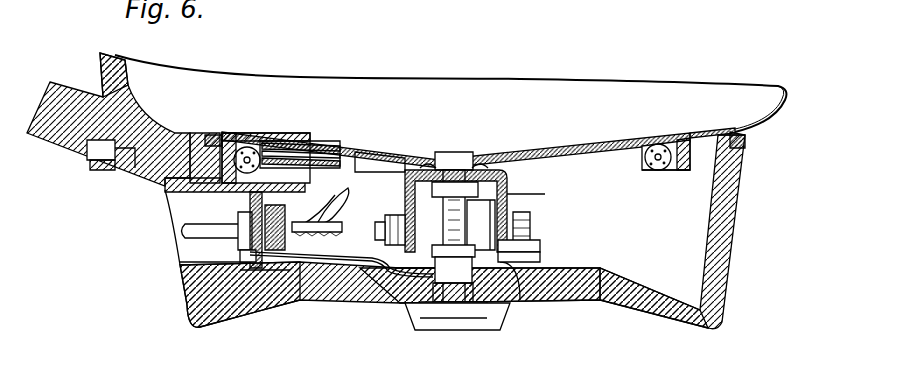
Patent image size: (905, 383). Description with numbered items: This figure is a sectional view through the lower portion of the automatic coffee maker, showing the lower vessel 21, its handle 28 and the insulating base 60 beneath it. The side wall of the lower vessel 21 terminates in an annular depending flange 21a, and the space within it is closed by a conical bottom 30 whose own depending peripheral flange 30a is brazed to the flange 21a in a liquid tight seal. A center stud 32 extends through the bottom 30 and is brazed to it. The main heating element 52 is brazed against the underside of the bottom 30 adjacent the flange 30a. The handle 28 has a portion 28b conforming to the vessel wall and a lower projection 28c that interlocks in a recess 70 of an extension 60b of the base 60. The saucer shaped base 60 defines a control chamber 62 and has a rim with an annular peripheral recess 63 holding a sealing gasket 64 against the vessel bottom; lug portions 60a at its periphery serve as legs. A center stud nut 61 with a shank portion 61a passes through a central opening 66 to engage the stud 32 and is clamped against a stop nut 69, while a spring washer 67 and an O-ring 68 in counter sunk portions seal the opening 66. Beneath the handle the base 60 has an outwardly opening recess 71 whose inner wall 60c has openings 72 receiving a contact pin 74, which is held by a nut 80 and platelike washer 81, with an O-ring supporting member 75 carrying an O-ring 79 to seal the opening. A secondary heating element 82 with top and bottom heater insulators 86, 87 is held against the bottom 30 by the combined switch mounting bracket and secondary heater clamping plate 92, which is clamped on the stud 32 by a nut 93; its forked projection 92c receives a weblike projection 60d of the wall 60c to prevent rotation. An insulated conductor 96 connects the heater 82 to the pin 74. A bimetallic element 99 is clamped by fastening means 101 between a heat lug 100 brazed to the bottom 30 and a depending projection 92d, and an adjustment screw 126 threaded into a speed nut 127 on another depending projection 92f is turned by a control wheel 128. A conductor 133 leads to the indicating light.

The lower vessel 21 is at (782, 92).
The annular depending flange 21a is at (215, 136).
The handle 28 is at (44, 140).
The handle portion 28b is at (104, 64).
The projection 28c is at (132, 176).
The bottom 30 is at (575, 146).
The depending peripheral flange 30a is at (680, 172).
The center stud 32 is at (449, 153).
The main heating element 52 is at (656, 148).
The insulating base 60 is at (732, 216).
The lug portions 60a is at (200, 328).
The extension 60b is at (135, 175).
The inner wall 60c is at (254, 272).
The weblike projection 60d is at (262, 186).
The center stud nut 61 is at (459, 320).
The shank portion 61a is at (517, 298).
The control chamber 62 is at (630, 286).
The annular peripheral recess 63 is at (746, 143).
The sealing gasket 64 is at (736, 134).
The central opening 66 is at (383, 290).
The spring washer 67 is at (417, 308).
The O-ring 68 is at (434, 320).
The stop nut 69 is at (460, 246).
The recess 70 is at (98, 166).
The outwardly opening recess 71 is at (185, 248).
The openings 72 is at (294, 232).
The contact pin 74 is at (185, 232).
The O-ring supporting member 75 is at (262, 272).
The O-ring 79 is at (240, 172).
The nut 80 is at (238, 216).
The platelike washer 81 is at (243, 256).
The secondary heating element 82 is at (356, 158).
The top heater insulator 86 is at (327, 146).
The bottom heater insulator 87 is at (345, 154).
The combined switch mounting bracket and secondary heater clamping plate 92 is at (503, 190).
The forked projection 92c is at (287, 228).
The depending projection 92d is at (365, 282).
The depending projection 92f is at (546, 194).
The nut 93 is at (476, 168).
The insulated conductor 96 is at (346, 200).
The bimetallic element 99 is at (390, 232).
The heat lug 100 is at (400, 168).
The fastening means 101 is at (385, 224).
The adjustment screw 126 is at (535, 236).
The speed nut 127 is at (530, 222).
The control wheel 128 is at (532, 250).
The conductor 133 is at (341, 264).